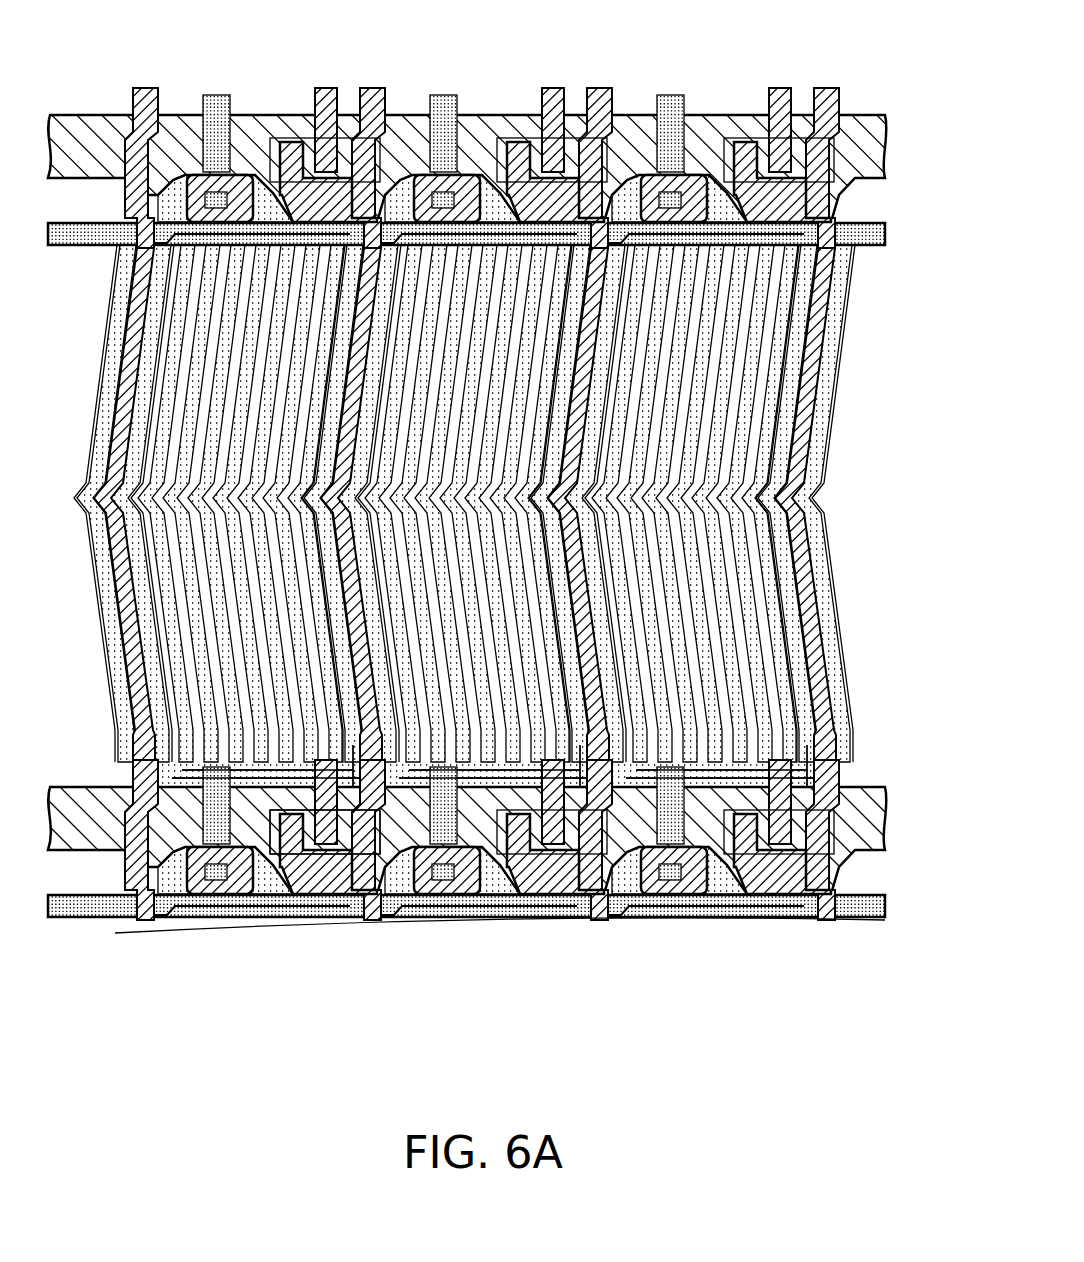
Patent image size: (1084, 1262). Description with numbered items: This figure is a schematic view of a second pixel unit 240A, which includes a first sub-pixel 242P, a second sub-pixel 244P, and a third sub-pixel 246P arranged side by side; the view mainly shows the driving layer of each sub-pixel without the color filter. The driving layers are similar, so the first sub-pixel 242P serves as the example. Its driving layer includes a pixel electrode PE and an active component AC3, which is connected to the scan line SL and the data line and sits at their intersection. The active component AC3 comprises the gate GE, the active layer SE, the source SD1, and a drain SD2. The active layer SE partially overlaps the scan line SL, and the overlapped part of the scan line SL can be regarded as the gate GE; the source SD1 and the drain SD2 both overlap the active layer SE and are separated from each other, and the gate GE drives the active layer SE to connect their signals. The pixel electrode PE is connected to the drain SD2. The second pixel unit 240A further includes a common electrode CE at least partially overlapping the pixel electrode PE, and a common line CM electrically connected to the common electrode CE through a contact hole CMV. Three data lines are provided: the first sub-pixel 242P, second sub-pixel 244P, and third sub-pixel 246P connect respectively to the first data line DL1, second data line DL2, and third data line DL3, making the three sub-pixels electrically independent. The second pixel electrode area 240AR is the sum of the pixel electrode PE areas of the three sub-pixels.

The first sub-pixel 242P is at (378, 72).
The second sub-pixel 244P is at (605, 72).
The third sub-pixel 246P is at (832, 72).
The common line CM is at (104, 247).
The contact hole CMV is at (205, 215).
The common electrode CE is at (190, 380).
The pixel electrode PE is at (325, 562).
The second pixel electrode area 240AR is at (517, 503).
The scan line SL is at (100, 787).
The gate GE is at (327, 800).
The source SD1 is at (315, 862).
The drain SD2 is at (232, 845).
The active layer SE is at (333, 846).
The first data line DL1 is at (383, 923).
The second data line DL2 is at (612, 923).
The third data line DL3 is at (840, 923).
The active component AC3 is at (373, 1003).
The second pixel unit 240A is at (773, 1081).